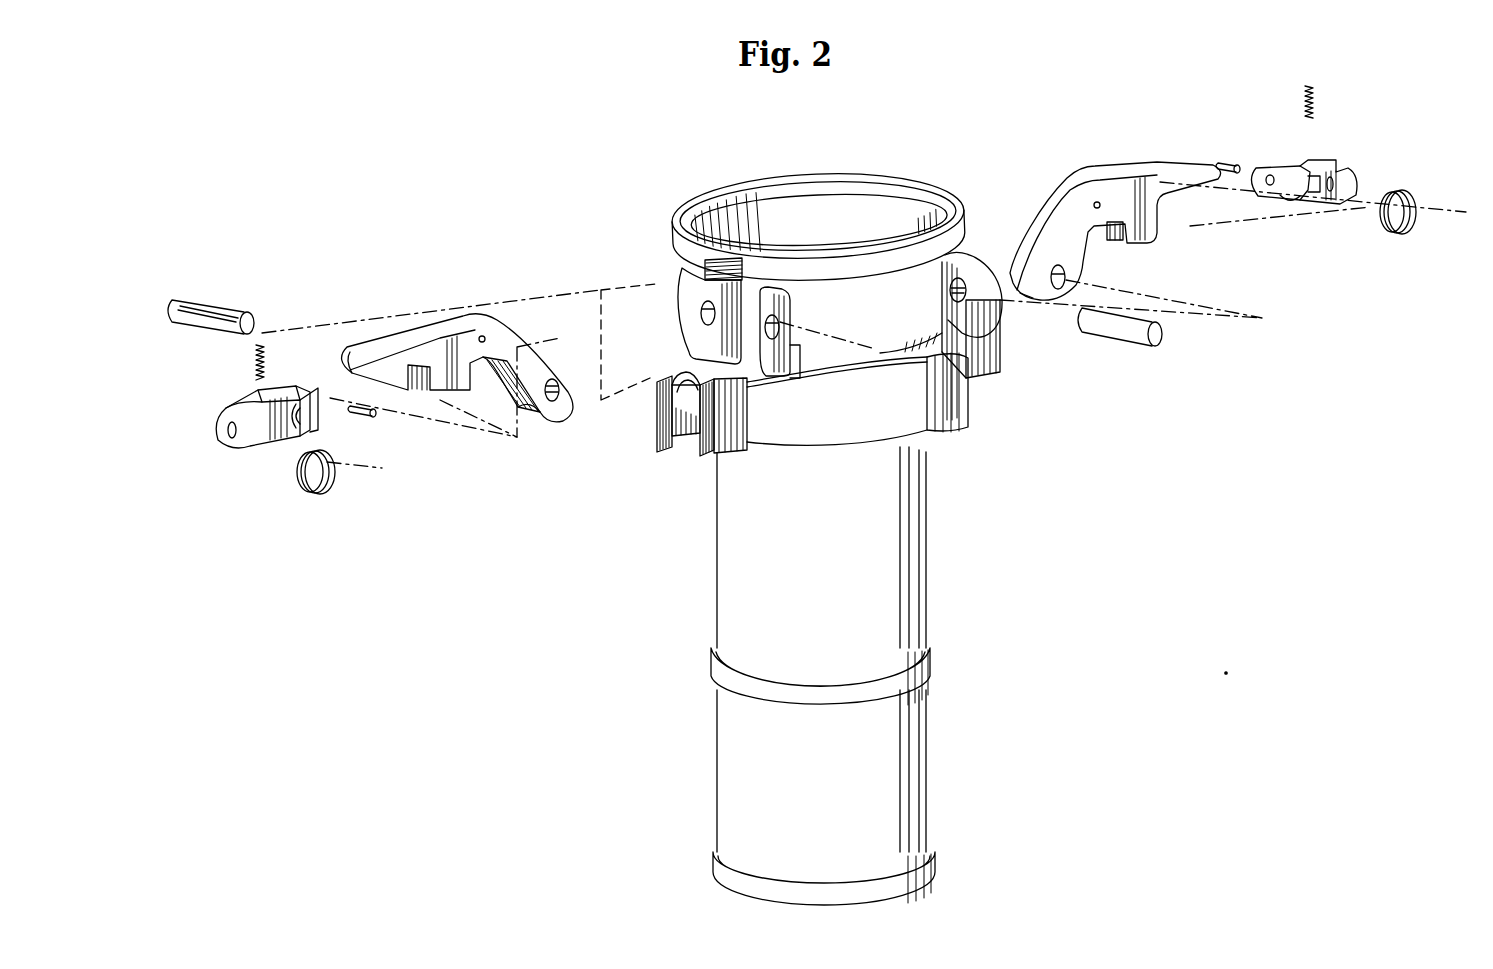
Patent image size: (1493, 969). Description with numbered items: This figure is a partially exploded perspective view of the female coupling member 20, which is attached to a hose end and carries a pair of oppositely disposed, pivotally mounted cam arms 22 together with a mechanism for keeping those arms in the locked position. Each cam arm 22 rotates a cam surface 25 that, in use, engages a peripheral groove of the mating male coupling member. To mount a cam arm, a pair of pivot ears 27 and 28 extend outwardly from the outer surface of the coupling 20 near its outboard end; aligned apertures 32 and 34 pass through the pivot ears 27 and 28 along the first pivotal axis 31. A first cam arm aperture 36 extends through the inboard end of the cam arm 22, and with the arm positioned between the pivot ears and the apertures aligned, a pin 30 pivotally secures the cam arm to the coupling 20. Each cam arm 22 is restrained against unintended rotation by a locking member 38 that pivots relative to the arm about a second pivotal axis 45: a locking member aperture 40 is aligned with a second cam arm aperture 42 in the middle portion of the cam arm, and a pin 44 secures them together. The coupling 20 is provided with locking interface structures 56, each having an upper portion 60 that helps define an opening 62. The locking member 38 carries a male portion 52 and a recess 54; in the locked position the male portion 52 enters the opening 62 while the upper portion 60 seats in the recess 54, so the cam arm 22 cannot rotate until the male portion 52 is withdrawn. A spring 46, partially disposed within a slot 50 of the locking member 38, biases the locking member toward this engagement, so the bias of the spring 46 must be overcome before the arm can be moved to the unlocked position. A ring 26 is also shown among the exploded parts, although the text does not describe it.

The female coupling member 20 is at (968, 153).
The cam arm 22 is at (432, 330).
The cam surface 25 is at (552, 420).
The ring 26 is at (298, 478).
The pivot ear 27 is at (775, 306).
The pivot ear 28 is at (690, 266).
The pin 30 is at (210, 303).
The first pivotal axis 31 is at (317, 337).
The aperture 32 is at (777, 328).
The aperture 34 is at (706, 306).
The first cam arm aperture 36 is at (556, 382).
The locking member 38 is at (216, 418).
The locking member aperture 40 is at (312, 392).
The second cam arm aperture 42 is at (485, 337).
The pin 44 is at (362, 414).
The second pivotal axis 45 is at (468, 427).
The spring 46 is at (252, 356).
The slot 50 is at (260, 400).
The male portion 52 is at (298, 425).
The recess 54 is at (302, 413).
The locking interface structure 56 is at (748, 448).
The upper portion 60 is at (694, 440).
The opening 62 is at (670, 372).